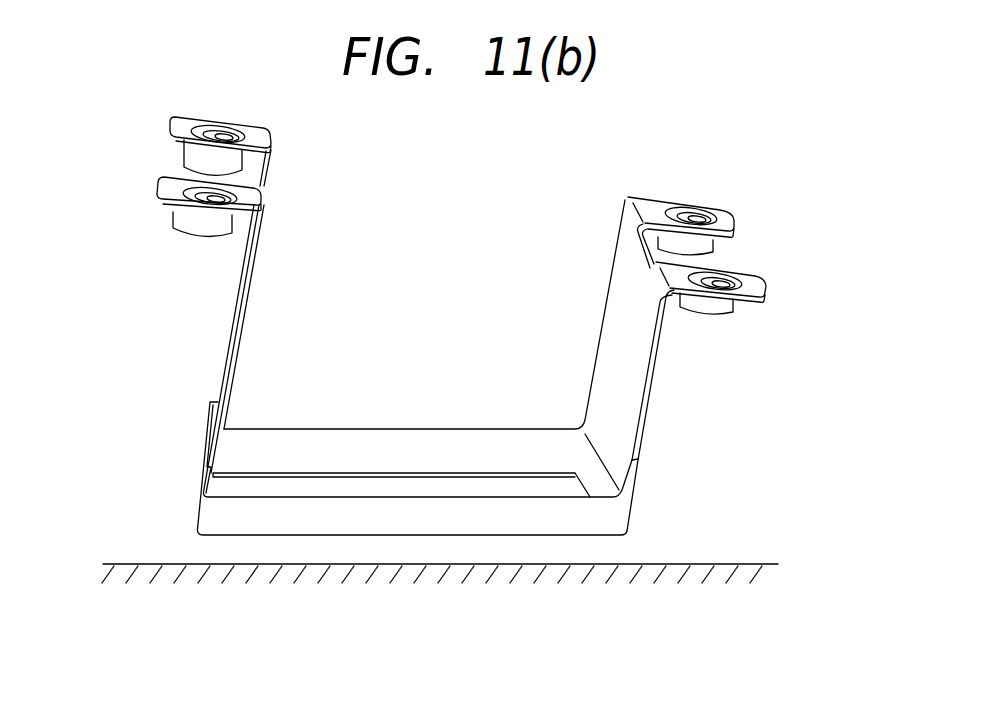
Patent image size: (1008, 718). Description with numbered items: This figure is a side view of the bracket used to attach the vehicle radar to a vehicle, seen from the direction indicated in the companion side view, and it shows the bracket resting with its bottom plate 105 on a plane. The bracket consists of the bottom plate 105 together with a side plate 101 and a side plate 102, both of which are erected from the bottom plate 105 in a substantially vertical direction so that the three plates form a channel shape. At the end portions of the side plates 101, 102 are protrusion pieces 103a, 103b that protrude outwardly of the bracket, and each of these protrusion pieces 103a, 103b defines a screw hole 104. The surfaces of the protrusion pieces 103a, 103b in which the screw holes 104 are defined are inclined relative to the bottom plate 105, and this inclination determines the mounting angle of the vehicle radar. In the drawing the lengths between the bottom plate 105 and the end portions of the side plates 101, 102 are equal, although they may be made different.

The side plate 101 is at (643, 412).
The side plate 102 is at (233, 325).
The protrusion piece 103a is at (756, 286).
The protrusion piece 103b is at (730, 195).
The screw hole 104 is at (694, 212).
The bottom plate 105 is at (415, 490).